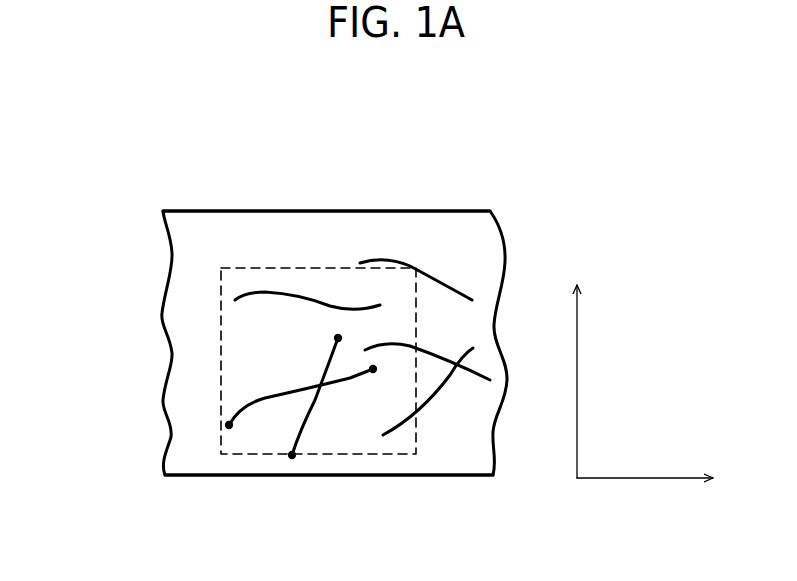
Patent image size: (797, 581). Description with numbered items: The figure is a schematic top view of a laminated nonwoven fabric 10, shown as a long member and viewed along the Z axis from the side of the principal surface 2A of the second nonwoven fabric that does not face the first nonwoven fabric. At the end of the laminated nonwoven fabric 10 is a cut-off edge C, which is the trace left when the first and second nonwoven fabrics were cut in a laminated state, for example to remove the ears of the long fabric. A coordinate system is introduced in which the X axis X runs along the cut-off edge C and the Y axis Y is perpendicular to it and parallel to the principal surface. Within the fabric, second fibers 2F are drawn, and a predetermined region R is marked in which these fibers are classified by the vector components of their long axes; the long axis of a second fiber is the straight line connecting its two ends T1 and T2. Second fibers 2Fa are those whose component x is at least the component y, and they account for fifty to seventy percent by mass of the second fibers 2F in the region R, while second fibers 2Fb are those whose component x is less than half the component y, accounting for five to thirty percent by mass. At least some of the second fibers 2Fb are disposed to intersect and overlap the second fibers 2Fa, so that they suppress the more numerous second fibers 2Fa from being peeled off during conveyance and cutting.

The laminated nonwoven fabric 10 is at (294, 286).
The principal surface 2A is at (200, 327).
The cut-off edge C is at (275, 209).
The predetermined region R is at (218, 270).
The second fibers 2F is at (259, 408).
The second fibers satisfying x ≥ y 2Fa is at (218, 462).
The second fibers satisfying x y/2 2Fb is at (305, 432).
The end of second fiber T1 is at (372, 378).
The end of second fiber T2 is at (226, 432).
The X axis X is at (656, 479).
The Y axis Y is at (574, 364).